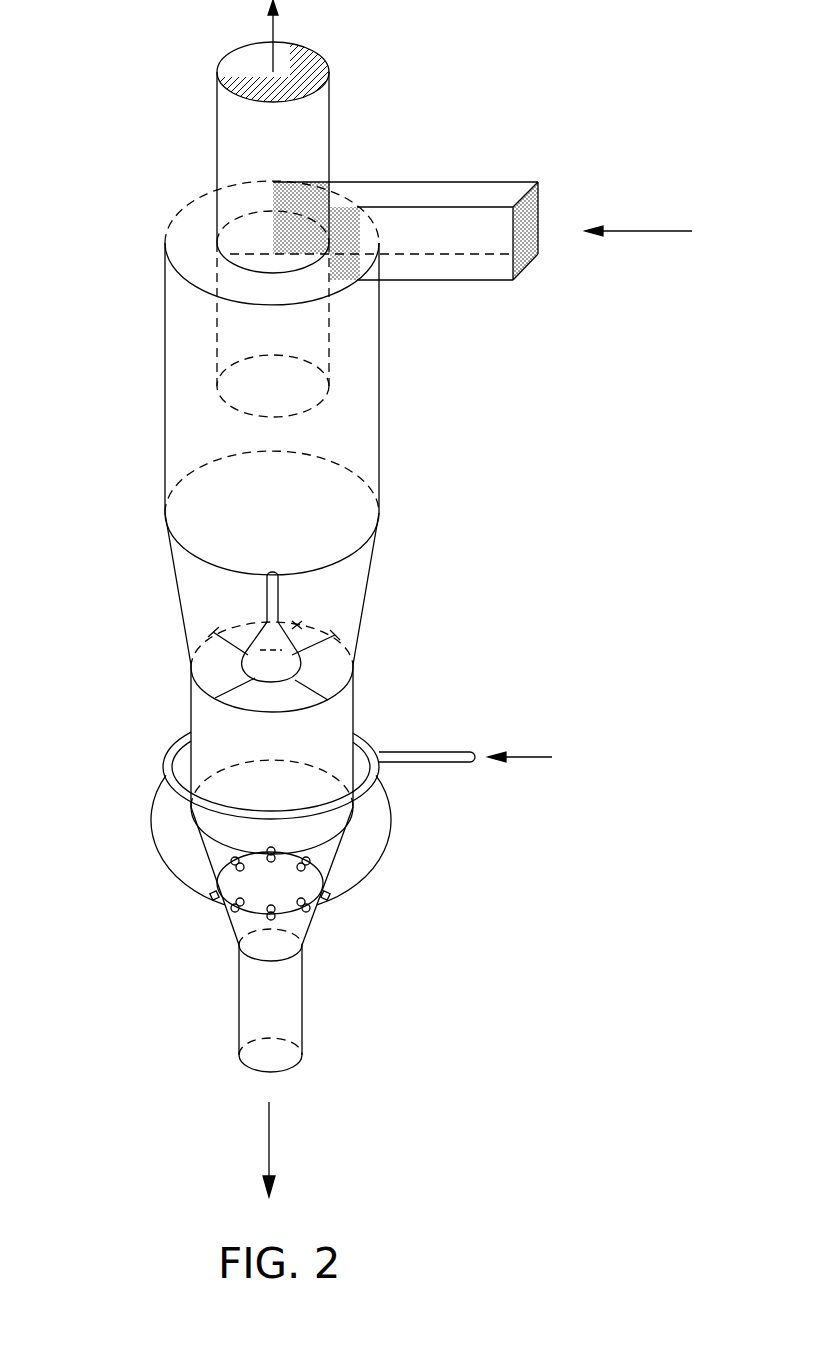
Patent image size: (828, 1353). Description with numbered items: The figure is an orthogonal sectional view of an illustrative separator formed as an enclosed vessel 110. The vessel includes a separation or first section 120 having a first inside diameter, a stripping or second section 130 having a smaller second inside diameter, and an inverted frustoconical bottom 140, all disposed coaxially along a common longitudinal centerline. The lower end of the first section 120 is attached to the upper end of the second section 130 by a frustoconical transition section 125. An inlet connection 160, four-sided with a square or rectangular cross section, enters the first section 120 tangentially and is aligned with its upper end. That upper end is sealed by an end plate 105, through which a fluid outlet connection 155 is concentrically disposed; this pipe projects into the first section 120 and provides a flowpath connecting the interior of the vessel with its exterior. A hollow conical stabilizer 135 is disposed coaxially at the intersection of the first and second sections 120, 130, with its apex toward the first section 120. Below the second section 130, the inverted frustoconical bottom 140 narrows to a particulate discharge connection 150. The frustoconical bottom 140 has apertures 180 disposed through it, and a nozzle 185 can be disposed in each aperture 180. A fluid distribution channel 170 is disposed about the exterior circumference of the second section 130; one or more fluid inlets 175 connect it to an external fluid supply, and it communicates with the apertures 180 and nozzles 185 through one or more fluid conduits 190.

The end plate 105 is at (199, 222).
The enclosed vessel 110 is at (166, 242).
The first section 120 is at (165, 423).
The transition section 125 is at (178, 594).
The second section 130 is at (191, 688).
The stabilizer 135 is at (300, 624).
The inverted frustoconical bottom 140 is at (230, 922).
The particulate discharge connection 150 is at (302, 1001).
The fluid outlet connection 155 is at (217, 100).
The inlet connection 160 is at (476, 182).
The fluid distribution channel 170 is at (163, 760).
The fluid inlet 175 is at (437, 751).
The aperture 180 is at (328, 878).
The nozzle 185 is at (330, 897).
The fluid conduit 190 is at (388, 830).